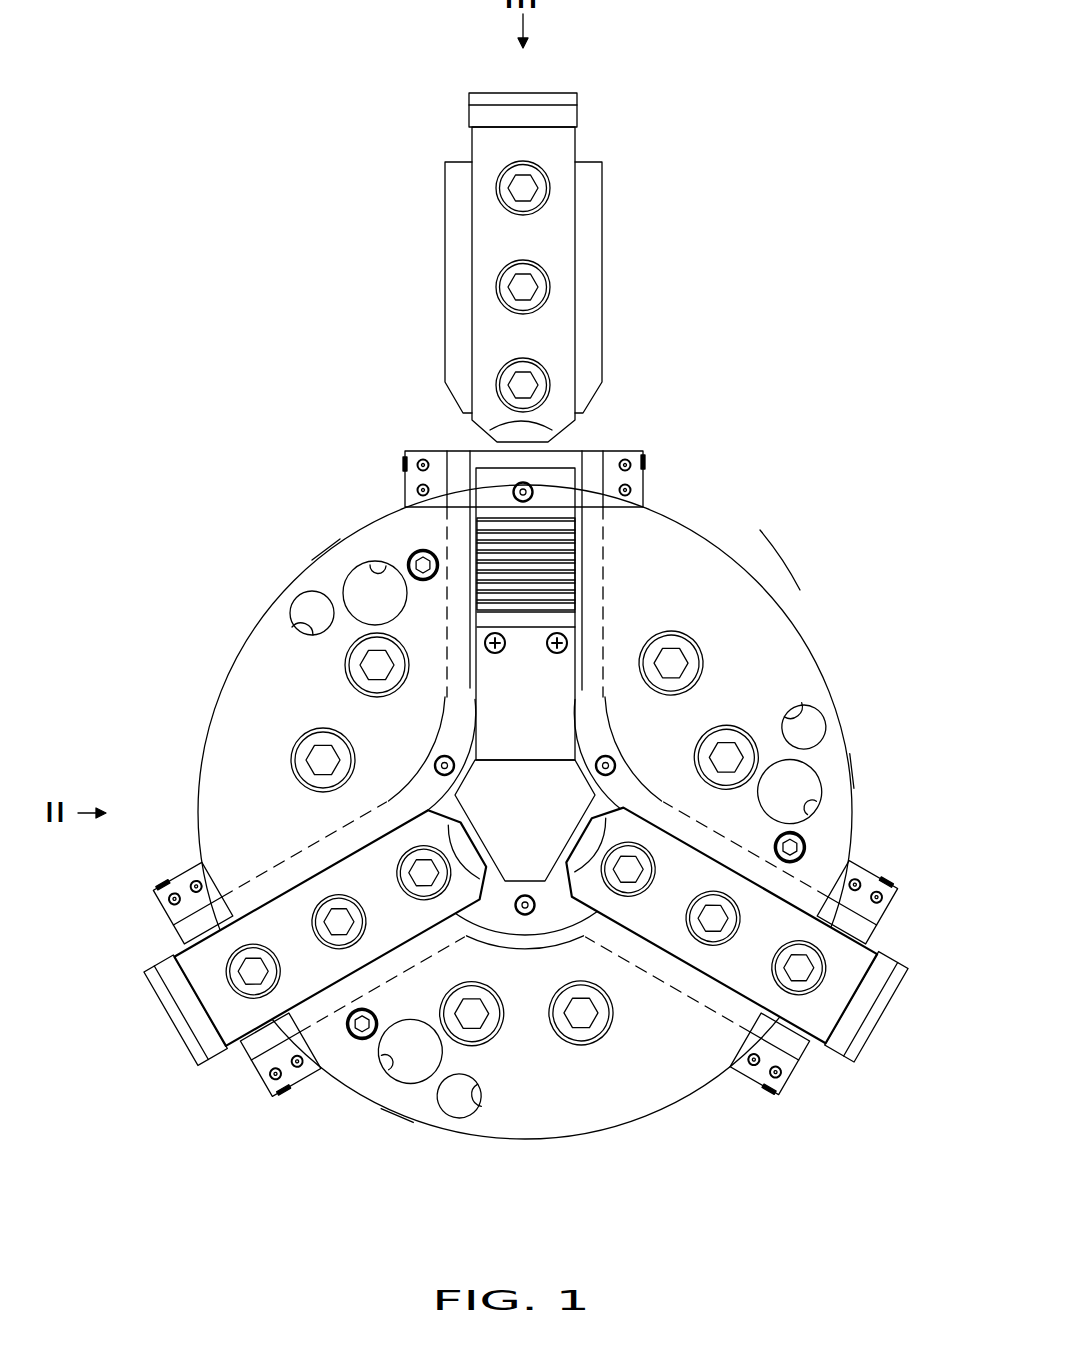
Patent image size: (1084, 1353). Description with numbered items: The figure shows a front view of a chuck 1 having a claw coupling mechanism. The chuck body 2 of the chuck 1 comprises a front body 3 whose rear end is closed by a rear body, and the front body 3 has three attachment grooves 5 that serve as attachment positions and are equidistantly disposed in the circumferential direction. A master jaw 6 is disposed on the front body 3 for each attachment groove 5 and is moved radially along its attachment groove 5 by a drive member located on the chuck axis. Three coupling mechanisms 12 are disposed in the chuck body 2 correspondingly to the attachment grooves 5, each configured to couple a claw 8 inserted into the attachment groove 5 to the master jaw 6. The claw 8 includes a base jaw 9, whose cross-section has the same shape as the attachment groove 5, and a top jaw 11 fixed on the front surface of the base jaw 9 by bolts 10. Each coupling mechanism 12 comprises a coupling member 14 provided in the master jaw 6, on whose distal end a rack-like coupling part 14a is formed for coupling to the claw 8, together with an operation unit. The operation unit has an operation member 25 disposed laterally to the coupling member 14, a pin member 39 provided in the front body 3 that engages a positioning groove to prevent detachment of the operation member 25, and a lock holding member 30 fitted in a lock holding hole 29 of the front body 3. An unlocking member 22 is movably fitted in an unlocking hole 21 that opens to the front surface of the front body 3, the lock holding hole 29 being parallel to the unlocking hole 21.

The chuck 1 is at (755, 211).
The chuck body 2 is at (696, 524).
The front body 3 is at (783, 618).
The attachment groove 5 is at (476, 681).
The master jaw 6 is at (570, 620).
The claw 8 is at (523, 579).
The base jaw 9 is at (597, 243).
The bolt 10 is at (545, 188).
The top jaw 11 is at (567, 293).
The coupling mechanism 12 is at (591, 814).
The coupling member 14 is at (599, 564).
The coupling part 14a is at (578, 570).
The unlocking hole 21 is at (378, 560).
The unlocking member 22 is at (362, 573).
The operation member 25 is at (318, 553).
The lock holding hole 29 is at (303, 623).
The lock holding member 30 is at (298, 612).
The pin member 39 is at (422, 558).